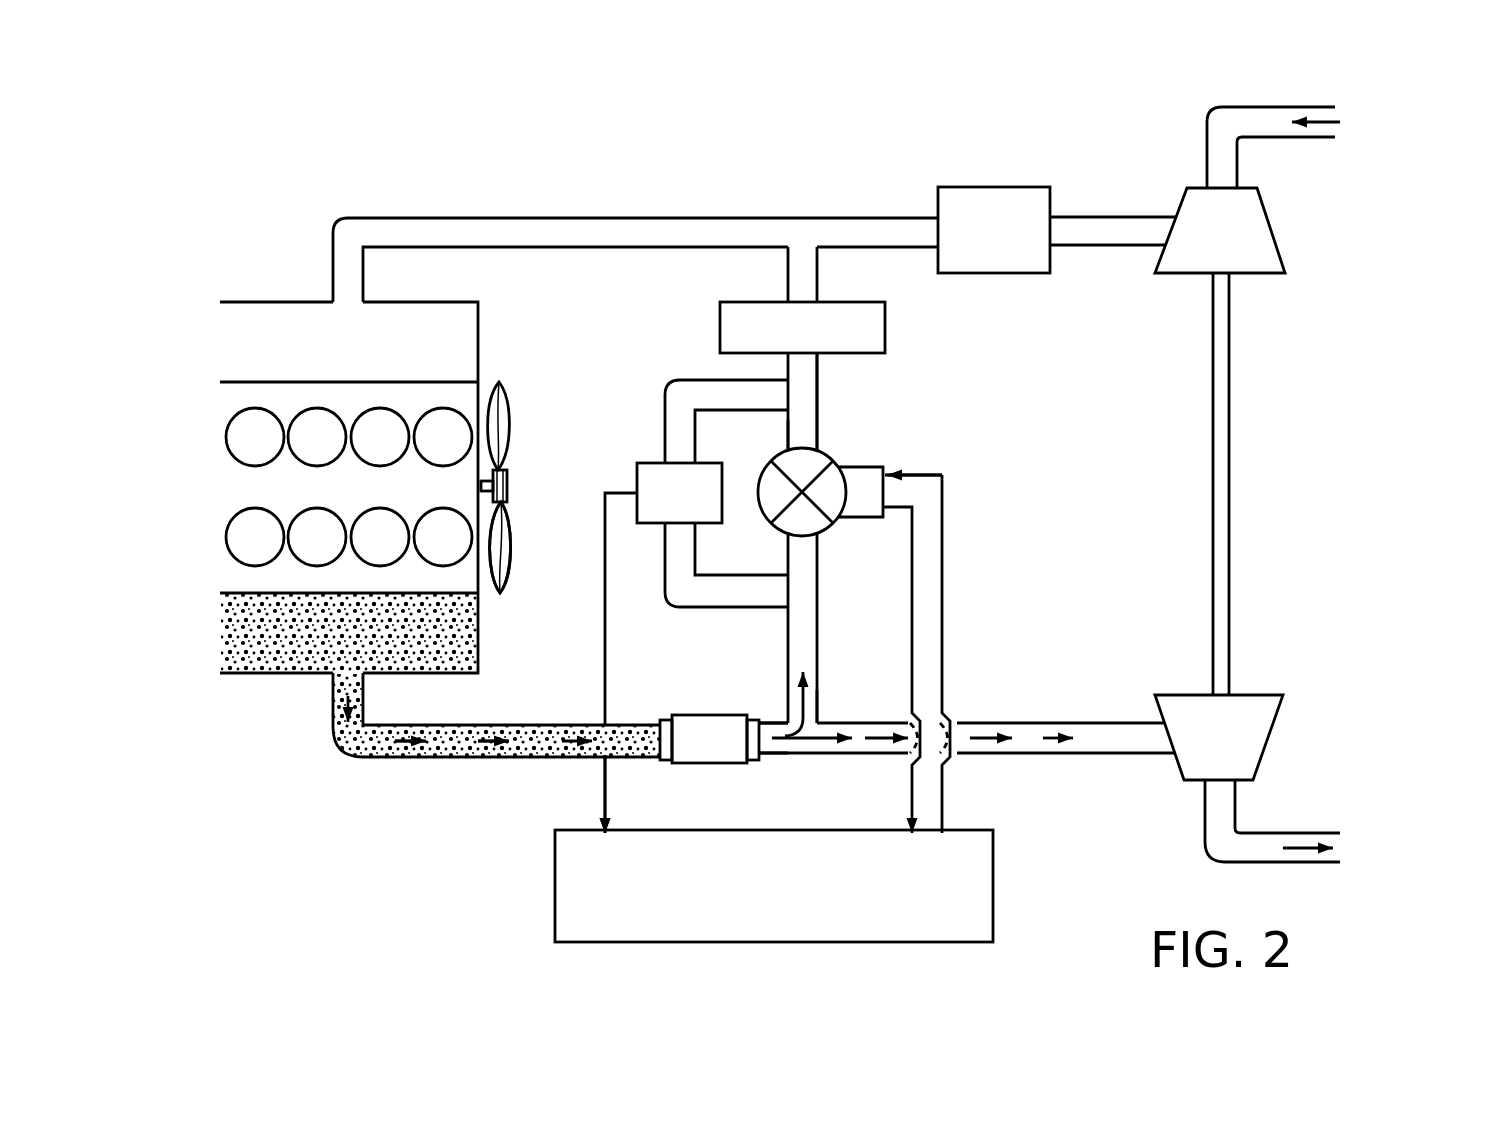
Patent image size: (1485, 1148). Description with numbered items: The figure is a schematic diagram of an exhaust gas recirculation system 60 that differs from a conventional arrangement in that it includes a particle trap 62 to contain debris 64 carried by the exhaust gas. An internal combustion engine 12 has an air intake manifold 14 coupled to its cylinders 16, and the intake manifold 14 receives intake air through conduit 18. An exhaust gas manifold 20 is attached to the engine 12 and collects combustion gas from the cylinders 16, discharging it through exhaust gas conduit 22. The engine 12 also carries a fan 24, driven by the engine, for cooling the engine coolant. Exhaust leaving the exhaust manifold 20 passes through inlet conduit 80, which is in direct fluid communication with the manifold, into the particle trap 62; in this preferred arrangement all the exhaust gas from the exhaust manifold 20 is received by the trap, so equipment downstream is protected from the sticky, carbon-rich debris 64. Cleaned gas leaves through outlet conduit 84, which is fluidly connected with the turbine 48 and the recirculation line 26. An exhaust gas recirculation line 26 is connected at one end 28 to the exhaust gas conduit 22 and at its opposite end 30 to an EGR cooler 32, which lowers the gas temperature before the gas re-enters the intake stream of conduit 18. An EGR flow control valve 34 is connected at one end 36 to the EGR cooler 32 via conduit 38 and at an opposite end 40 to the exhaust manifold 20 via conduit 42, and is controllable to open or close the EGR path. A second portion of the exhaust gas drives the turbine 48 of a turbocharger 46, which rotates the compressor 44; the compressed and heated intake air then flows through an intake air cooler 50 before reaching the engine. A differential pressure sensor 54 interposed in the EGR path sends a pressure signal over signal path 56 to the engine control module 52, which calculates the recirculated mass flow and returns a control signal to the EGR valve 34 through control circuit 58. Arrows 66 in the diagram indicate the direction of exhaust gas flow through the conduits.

The internal combustion engine 12 is at (505, 370).
The air intake manifold 14 is at (470, 302).
The cylinders 16 is at (303, 415).
The conduit 18 is at (650, 216).
The exhaust gas manifold 20 is at (270, 674).
The exhaust gas conduit 22 is at (855, 755).
The fan 24 is at (510, 553).
The exhaust gas recirculation line 26 is at (818, 402).
The end 28 is at (818, 712).
The opposite end 30 is at (818, 370).
The EGR cooler 32 is at (886, 318).
The EGR flow control valve 34 is at (846, 467).
The end 36 is at (797, 450).
The conduit 38 is at (786, 420).
The opposite end 40 is at (797, 536).
The conduit 42 is at (818, 645).
The compressor 44 is at (1272, 232).
The turbocharger 46 is at (1266, 457).
The turbine 48 is at (1277, 730).
The intake air cooler 50 is at (978, 187).
The engine control module 52 is at (993, 868).
The pressure sensor 54 is at (655, 463).
The signal path 56 is at (605, 670).
The control circuit 58 is at (965, 614).
The exhaust gas recirculation system 60 is at (773, 184).
The particle trap 62 is at (706, 712).
The debris 64 is at (375, 757).
The exhaust gas flow 66 is at (803, 697).
The inlet conduit 80 is at (625, 758).
The outlet conduit 84 is at (762, 746).